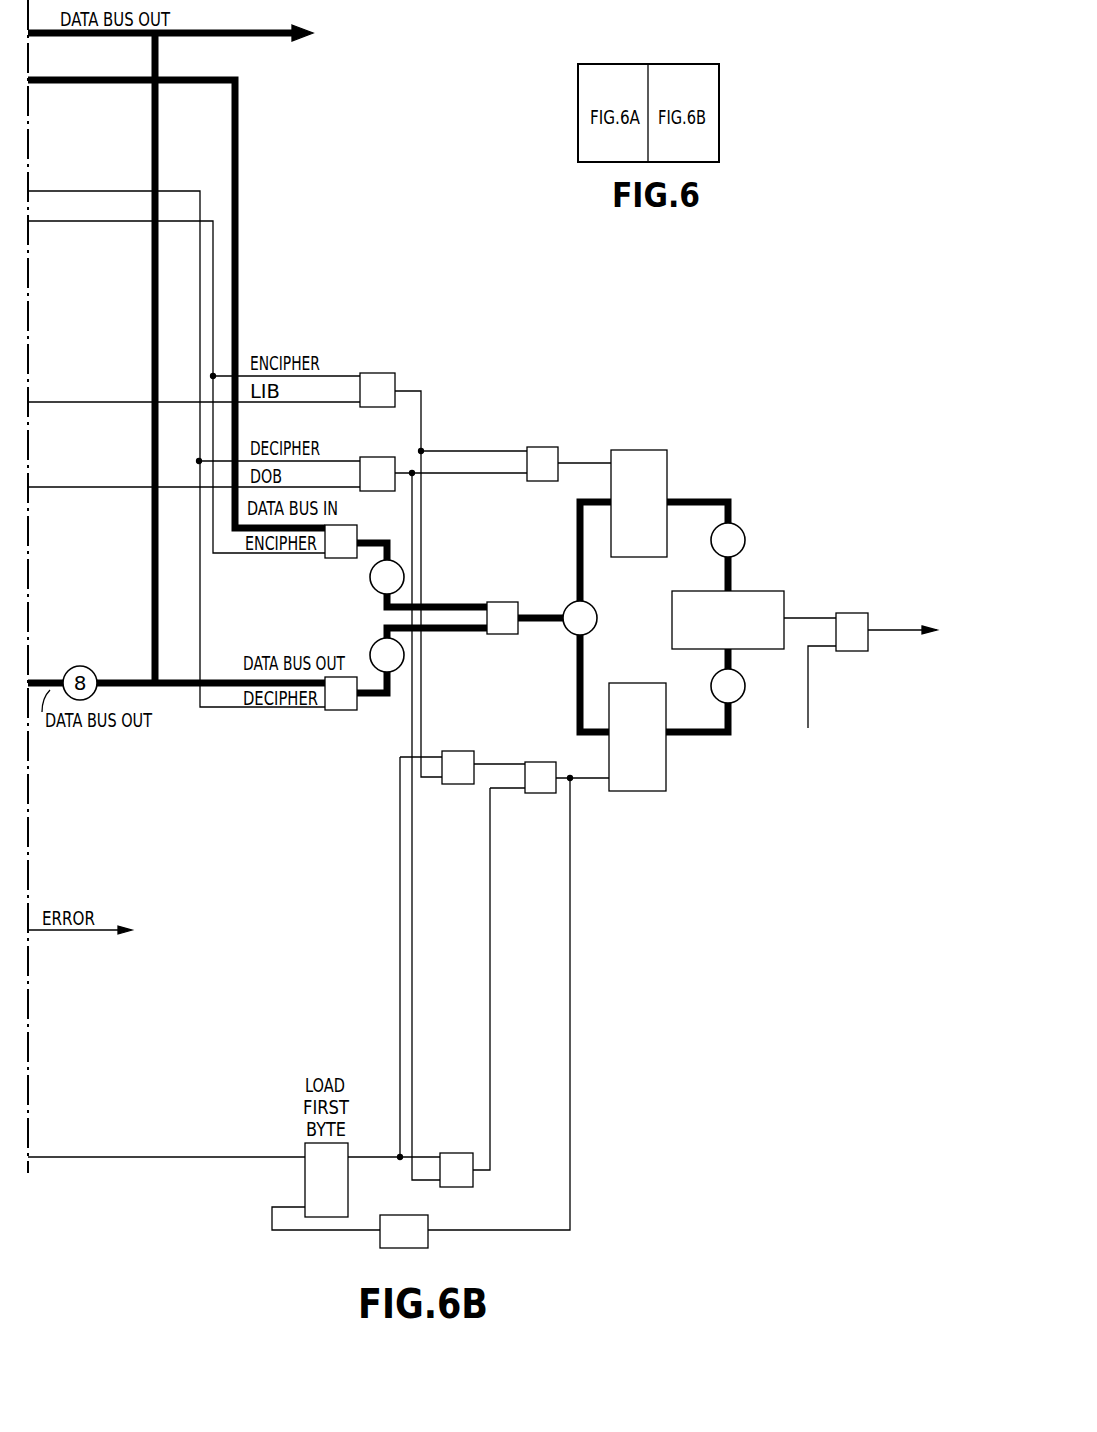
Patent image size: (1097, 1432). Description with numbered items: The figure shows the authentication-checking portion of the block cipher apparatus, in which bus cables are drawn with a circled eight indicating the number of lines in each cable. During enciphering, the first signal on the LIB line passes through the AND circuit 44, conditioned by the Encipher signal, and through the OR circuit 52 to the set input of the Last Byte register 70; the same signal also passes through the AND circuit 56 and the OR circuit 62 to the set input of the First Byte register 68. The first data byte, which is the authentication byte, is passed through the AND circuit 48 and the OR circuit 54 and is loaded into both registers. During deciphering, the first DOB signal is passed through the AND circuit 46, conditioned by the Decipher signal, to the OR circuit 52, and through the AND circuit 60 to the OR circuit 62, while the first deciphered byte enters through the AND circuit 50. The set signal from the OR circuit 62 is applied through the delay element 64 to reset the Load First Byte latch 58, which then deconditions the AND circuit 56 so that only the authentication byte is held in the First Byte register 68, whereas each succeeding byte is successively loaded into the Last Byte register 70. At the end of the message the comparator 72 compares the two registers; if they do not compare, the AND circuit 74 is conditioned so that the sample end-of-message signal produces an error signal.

The AND circuit 44 is at (384, 356).
The AND circuit 46 is at (400, 446).
The AND circuit 48 is at (350, 560).
The AND circuit 50 is at (350, 711).
The OR circuit 52 is at (536, 447).
The OR circuit 54 is at (506, 602).
The AND circuit 56 is at (475, 751).
The Load First Byte latch 58 is at (350, 1196).
The AND circuit 60 is at (462, 1135).
The OR circuit 62 is at (540, 795).
The delay element 64 is at (398, 1249).
The First Byte register 68 is at (667, 772).
The Last Byte register 70 is at (667, 465).
The comparator 72 is at (772, 591).
The AND circuit 74 is at (858, 613).